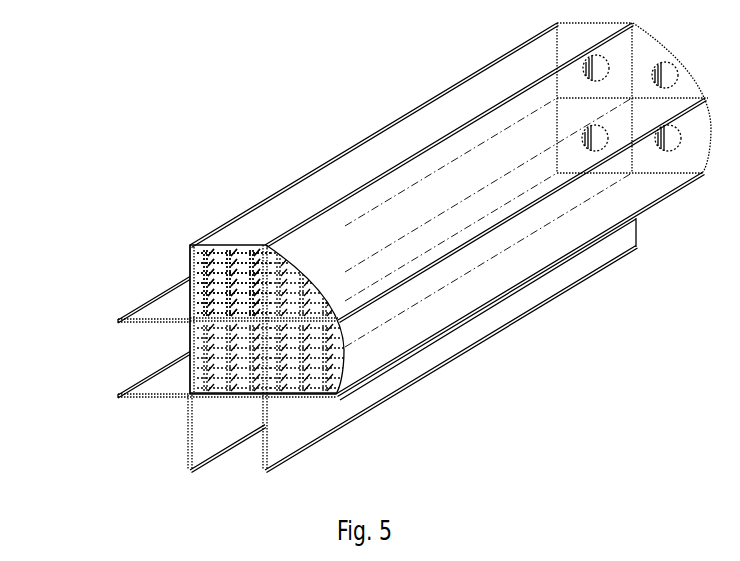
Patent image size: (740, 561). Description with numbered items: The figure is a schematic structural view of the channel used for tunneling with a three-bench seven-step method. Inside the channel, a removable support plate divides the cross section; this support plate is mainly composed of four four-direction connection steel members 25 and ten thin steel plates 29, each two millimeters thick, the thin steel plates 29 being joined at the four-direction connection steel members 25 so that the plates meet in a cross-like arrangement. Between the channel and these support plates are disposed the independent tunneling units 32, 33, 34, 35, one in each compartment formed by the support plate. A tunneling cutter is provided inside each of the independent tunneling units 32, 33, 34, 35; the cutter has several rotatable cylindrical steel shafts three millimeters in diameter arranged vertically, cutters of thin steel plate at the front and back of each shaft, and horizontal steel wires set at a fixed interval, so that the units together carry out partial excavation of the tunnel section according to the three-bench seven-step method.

The independent tunneling unit for tunneling with a three-bench seven-step method 32 is at (188, 281).
The independent tunneling unit for tunneling with a three-bench seven-step method 33 is at (188, 357).
The thin steel plate 29 is at (120, 396).
The four-direction connection steel member 25 is at (188, 396).
The independent tunneling unit for tunneling with a three-bench seven-step method 34 is at (334, 319).
The independent tunneling unit for tunneling with a three-bench seven-step method 35 is at (334, 394).